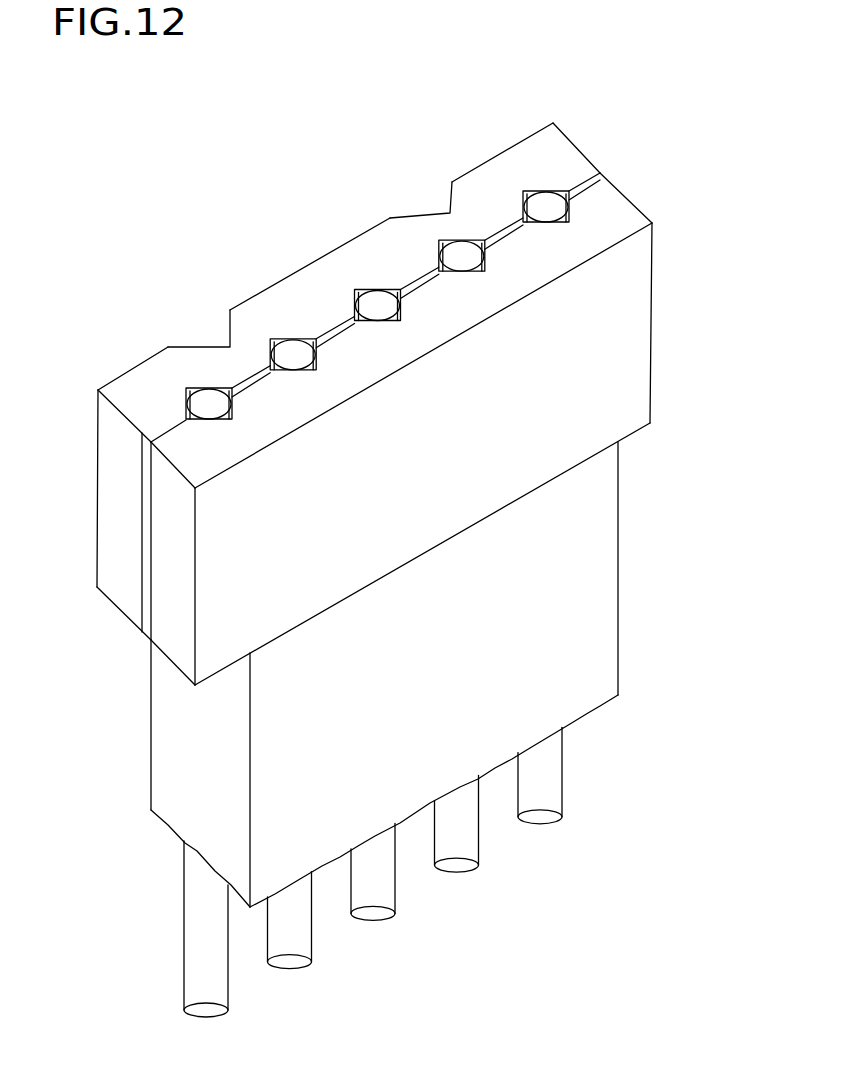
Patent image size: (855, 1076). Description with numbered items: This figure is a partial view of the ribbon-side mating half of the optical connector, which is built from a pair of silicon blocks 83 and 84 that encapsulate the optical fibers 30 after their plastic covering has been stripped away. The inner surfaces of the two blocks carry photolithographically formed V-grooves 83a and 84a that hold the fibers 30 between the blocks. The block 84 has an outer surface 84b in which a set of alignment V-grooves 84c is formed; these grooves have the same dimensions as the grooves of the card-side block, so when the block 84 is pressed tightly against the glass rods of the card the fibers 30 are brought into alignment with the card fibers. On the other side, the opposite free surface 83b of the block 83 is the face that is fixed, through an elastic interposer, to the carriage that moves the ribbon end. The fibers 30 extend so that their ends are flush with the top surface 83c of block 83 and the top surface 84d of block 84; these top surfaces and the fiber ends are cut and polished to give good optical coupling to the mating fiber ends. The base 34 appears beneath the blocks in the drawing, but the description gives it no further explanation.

The fibers 30 is at (545, 210).
The base block 34 is at (575, 572).
The silicon block 83 is at (444, 426).
The V-grooves 83a is at (500, 312).
The opposite free surface 83b is at (622, 383).
The top surface 83c is at (602, 218).
The silicon block 84 is at (389, 339).
The V-grooves 84a is at (457, 243).
The outer surface 84b is at (523, 145).
The V-grooves 84c is at (420, 215).
The top surface 84d is at (577, 158).